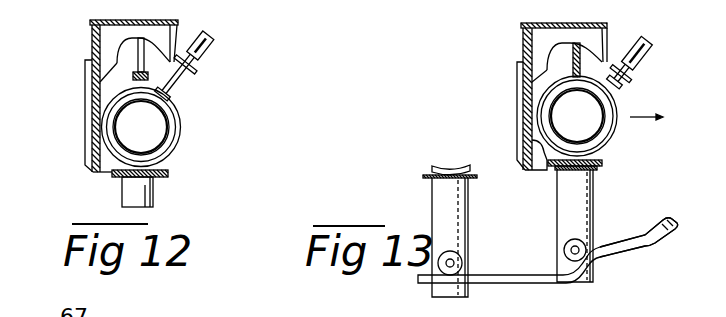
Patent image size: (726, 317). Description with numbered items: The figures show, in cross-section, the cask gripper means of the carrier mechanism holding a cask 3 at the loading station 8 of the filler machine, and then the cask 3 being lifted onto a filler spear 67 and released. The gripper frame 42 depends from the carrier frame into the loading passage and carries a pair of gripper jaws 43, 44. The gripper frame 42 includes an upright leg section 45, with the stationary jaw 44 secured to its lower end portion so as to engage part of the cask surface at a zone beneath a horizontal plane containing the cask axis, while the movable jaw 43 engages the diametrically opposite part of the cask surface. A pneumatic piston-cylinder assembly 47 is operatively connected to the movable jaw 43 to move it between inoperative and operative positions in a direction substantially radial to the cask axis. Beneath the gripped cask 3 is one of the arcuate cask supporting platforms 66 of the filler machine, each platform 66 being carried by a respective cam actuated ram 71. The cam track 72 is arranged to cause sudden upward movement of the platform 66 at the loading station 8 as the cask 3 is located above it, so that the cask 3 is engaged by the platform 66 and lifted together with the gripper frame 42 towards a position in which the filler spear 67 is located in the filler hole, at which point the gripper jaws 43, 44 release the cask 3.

In FIG. 12, the cask 3 is at (153, 132).
In FIG. 13, the cask 3 is at (593, 127).
In FIG. 13, the loading station 8 is at (524, 255).
In FIG. 12, the gripper frame 42 is at (80, 131).
In FIG. 13, the gripper frame 42 is at (507, 103).
In FIG. 12, the gripper jaw 43 is at (173, 99).
In FIG. 13, the gripper jaw 43 is at (626, 87).
In FIG. 12, the gripper jaw 44 is at (104, 167).
In FIG. 13, the gripper jaw 44 is at (528, 136).
In FIG. 12, the upright leg section 45 is at (90, 92).
In FIG. 13, the upright leg section 45 is at (518, 80).
In FIG. 12, the pneumatic piston-cylinder assembly 47 is at (209, 53).
In FIG. 13, the pneumatic piston-cylinder assembly 47 is at (646, 54).
In FIG. 12, the cask supporting platform 66 is at (168, 171).
In FIG. 13, the cask supporting platform 66 is at (601, 160).
In FIG. 12, the filler spear 67 is at (137, 55).
In FIG. 13, the filler spear 67 is at (573, 60).
In FIG. 12, the cam actuated ram 71 is at (142, 192).
In FIG. 13, the cam actuated ram 71 is at (578, 205).
In FIG. 13, the cam track 72 is at (618, 248).